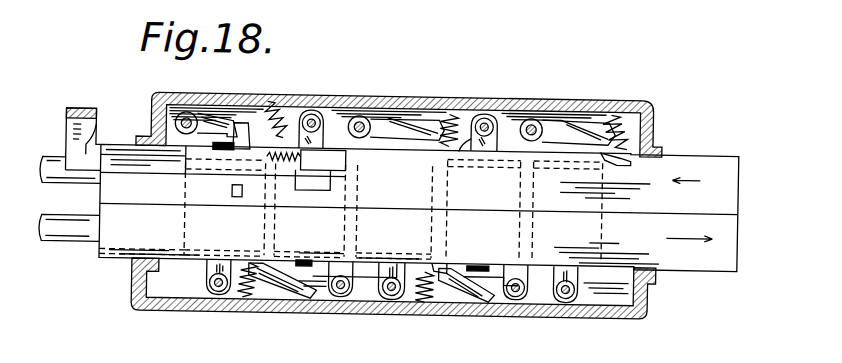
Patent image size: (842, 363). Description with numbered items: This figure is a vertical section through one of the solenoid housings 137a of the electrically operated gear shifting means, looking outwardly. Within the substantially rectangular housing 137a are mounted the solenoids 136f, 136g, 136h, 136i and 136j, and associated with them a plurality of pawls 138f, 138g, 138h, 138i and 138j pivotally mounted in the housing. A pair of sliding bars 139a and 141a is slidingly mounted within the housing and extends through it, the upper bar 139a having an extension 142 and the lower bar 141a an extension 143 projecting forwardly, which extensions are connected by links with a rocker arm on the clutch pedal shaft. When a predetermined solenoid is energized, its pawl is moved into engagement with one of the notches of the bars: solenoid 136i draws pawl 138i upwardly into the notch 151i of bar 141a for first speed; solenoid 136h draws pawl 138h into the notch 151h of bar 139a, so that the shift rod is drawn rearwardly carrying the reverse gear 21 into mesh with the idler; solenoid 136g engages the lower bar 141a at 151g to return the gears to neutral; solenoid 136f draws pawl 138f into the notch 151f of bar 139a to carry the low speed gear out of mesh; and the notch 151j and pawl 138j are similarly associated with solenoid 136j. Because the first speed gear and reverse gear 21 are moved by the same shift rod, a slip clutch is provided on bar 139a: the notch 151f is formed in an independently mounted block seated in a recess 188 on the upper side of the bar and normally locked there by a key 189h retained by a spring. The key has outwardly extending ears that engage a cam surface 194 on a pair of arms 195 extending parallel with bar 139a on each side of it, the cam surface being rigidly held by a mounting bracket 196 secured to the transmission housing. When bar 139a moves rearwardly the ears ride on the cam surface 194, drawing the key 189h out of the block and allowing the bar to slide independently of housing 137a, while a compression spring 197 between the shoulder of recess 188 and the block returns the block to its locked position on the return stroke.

The reverse gear 21 is at (237, 215).
The solenoid 136f is at (182, 228).
The solenoid 136g is at (345, 226).
The solenoid 136h is at (430, 224).
The solenoid 136i is at (511, 180).
The solenoid 136j is at (594, 178).
The solenoid housing 137a is at (596, 98).
The pawl 138f is at (252, 119).
The pawl 138g is at (310, 284).
The pawl 138h is at (407, 110).
The pawl 138i is at (497, 291).
The pawl 138j is at (545, 118).
The sliding bar 139a is at (702, 158).
The sliding bar 141a is at (680, 267).
The extension 142 is at (50, 163).
The extension 143 is at (65, 243).
The notch 151f is at (243, 148).
The notch 151g is at (296, 269).
The notch 151h is at (458, 122).
The notch 151i is at (446, 262).
The notch 151j is at (623, 159).
The recess 188 is at (306, 178).
The key 189h is at (224, 172).
The cam surface 194 is at (282, 182).
The arms 195 is at (89, 147).
The mounting bracket 196 is at (71, 113).
The compression spring 197 is at (322, 141).